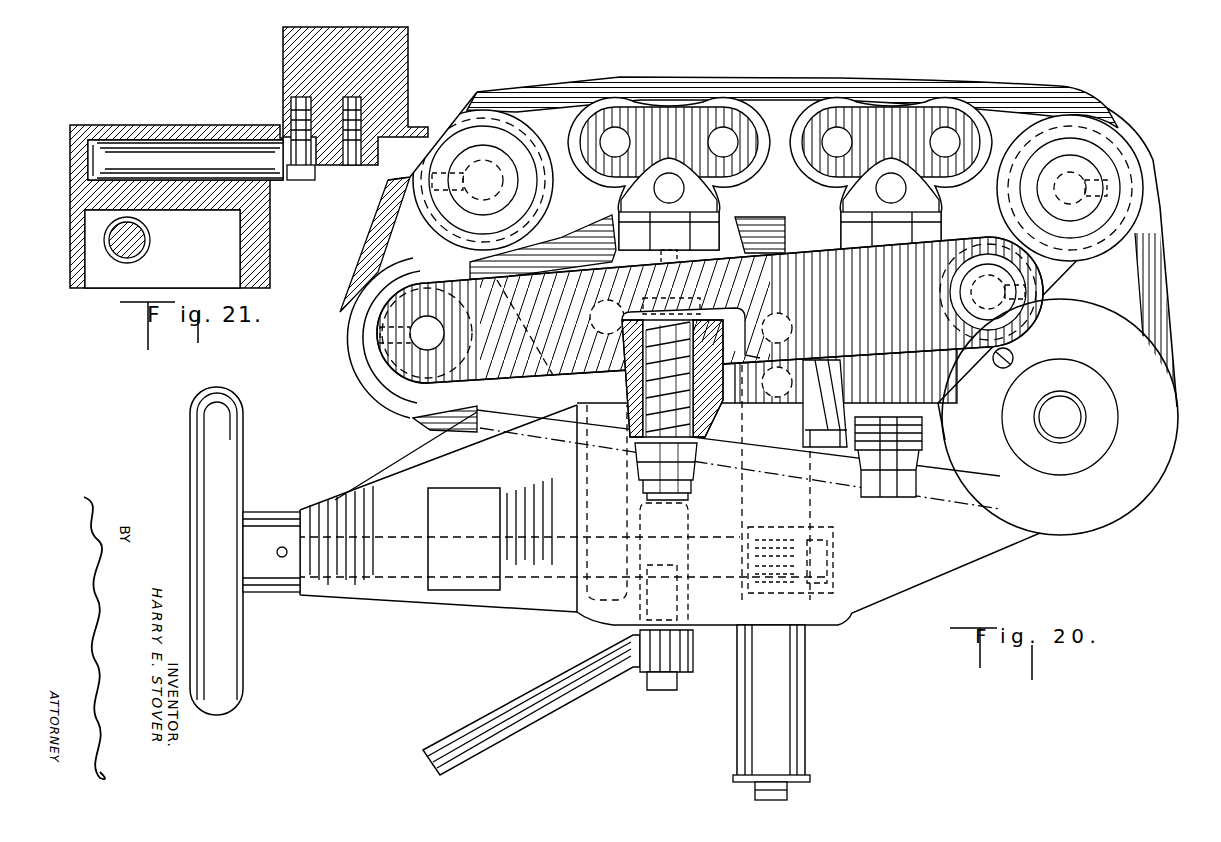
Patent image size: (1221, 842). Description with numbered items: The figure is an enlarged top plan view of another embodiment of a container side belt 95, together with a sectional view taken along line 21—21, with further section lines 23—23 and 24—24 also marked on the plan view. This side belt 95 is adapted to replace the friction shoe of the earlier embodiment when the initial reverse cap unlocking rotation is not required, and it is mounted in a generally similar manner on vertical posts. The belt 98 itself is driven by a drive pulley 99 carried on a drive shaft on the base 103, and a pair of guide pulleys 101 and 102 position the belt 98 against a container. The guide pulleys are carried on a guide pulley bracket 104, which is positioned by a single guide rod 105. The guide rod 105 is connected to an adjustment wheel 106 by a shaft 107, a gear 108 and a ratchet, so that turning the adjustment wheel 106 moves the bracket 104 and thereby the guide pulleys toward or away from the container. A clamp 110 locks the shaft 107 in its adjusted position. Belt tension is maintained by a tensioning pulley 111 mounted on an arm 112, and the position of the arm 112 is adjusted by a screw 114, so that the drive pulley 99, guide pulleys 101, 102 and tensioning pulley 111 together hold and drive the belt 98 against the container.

In FIG. 20, the section line 21— 21 is at (608, 265).
In FIG. 20, the section line 23— 23 is at (668, 72).
In FIG. 20, the section line 24— 24 is at (783, 200).
In FIG. 20, the side belt 95 is at (1087, 73).
In FIG. 20, the belt 98 is at (1158, 212).
In FIG. 20, the drive pulley 99 is at (1162, 390).
In FIG. 20, the guide pulley 101 is at (1112, 141).
In FIG. 20, the guide pulley 102 is at (718, 98).
In FIG. 21, the base 103 is at (174, 127).
In FIG. 20, the guide pulley bracket 104 is at (1045, 278).
In FIG. 21, the guide pulley bracket 104 is at (400, 85).
In FIG. 20, the guide rod 105 is at (807, 667).
In FIG. 20, the adjustment wheel 106 is at (233, 430).
In FIG. 20, the shaft 107 is at (383, 563).
In FIG. 21, the shaft 107 is at (122, 254).
In FIG. 20, the gear 108 is at (813, 515).
In FIG. 20, the clamp 110 is at (503, 710).
In FIG. 20, the tensioning pulley 111 is at (387, 305).
In FIG. 20, the arm 112 is at (530, 287).
In FIG. 20, the screw 114 is at (805, 428).